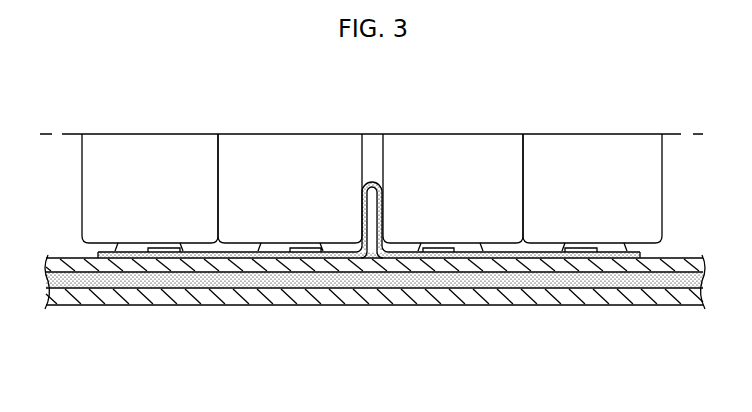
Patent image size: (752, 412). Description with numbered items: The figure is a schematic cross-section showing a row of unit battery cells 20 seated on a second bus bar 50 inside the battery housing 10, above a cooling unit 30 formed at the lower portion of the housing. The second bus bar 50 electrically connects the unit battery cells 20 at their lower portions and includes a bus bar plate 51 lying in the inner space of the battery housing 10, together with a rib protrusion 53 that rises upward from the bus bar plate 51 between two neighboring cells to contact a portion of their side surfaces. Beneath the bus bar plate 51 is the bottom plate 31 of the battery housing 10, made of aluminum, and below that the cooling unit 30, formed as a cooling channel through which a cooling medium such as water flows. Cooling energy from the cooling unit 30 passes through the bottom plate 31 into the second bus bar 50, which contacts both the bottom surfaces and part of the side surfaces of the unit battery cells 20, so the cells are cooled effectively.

The unit battery cells 20 is at (148, 148).
The battery housing 10 is at (173, 300).
The cooling unit 30 is at (130, 286).
The bottom plate 31 is at (88, 268).
The second bus bar 50 is at (369, 286).
The bus bar plate 51 is at (512, 252).
The rib protrusion 53 is at (383, 208).